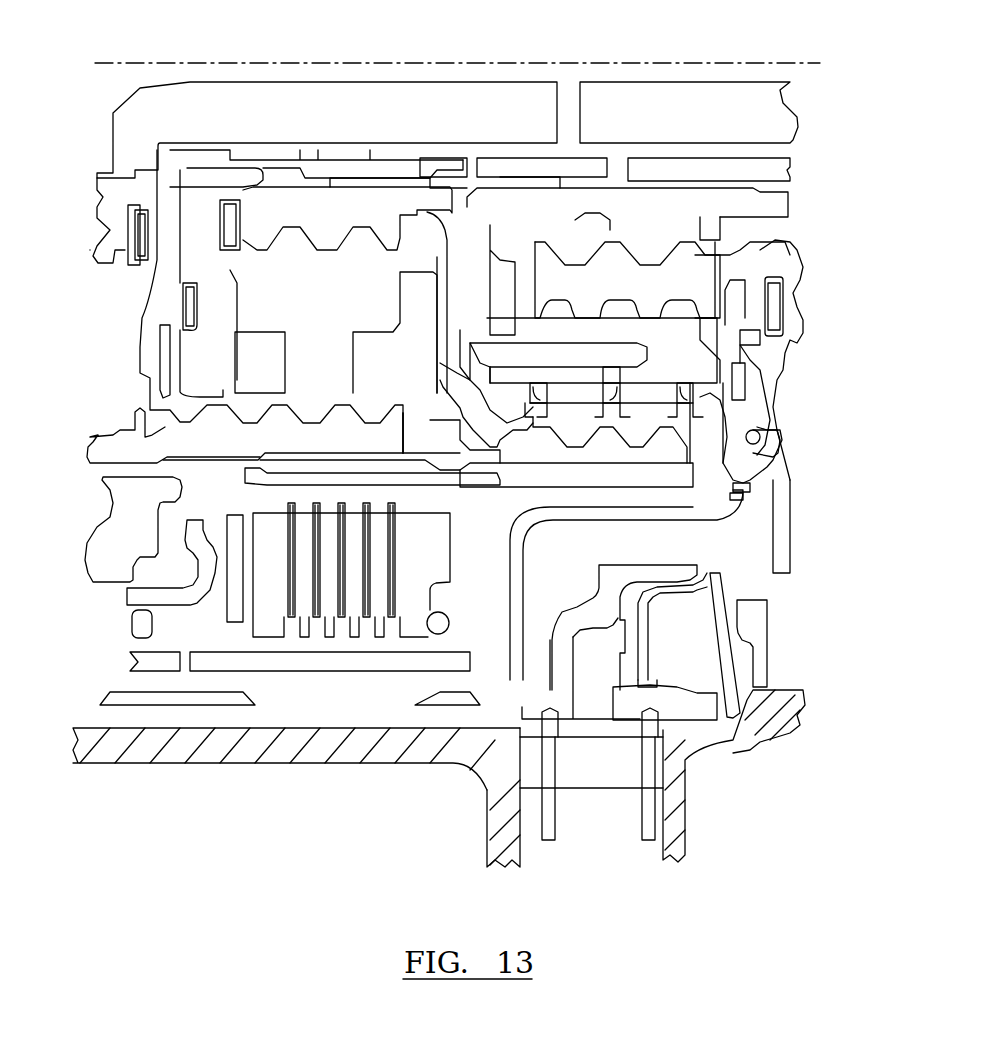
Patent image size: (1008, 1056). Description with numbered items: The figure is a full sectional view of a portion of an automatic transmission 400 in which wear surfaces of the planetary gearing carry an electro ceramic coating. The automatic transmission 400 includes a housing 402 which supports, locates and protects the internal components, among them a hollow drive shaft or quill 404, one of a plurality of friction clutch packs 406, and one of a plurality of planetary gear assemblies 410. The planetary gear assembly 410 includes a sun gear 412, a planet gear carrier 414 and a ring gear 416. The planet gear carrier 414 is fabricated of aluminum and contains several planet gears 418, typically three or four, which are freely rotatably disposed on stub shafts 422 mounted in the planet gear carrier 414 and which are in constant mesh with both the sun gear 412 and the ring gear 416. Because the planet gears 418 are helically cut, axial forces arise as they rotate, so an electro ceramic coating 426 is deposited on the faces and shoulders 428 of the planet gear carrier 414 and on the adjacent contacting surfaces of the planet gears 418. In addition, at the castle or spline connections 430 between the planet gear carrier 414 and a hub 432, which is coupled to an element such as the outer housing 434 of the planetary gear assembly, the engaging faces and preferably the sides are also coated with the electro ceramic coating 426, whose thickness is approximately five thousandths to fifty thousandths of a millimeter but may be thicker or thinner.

The automatic transmission 400 is at (275, 780).
The housing 402 is at (495, 835).
The hollow drive shaft or quill 404 is at (475, 115).
The friction clutch pack 406 is at (135, 523).
The planetary gear assembly 410 is at (818, 140).
The sun gear 412 is at (700, 517).
The planet gear carrier 414 is at (757, 455).
The ring gear 416 is at (643, 235).
The planet gears 418 is at (673, 410).
The stub shafts 422 is at (693, 355).
The electro ceramic coating 426 is at (690, 400).
The faces and shoulders 428 is at (530, 398).
The castle or spline connections 430 is at (760, 432).
The hub 432 is at (608, 513).
The outer housing 434 is at (338, 660).